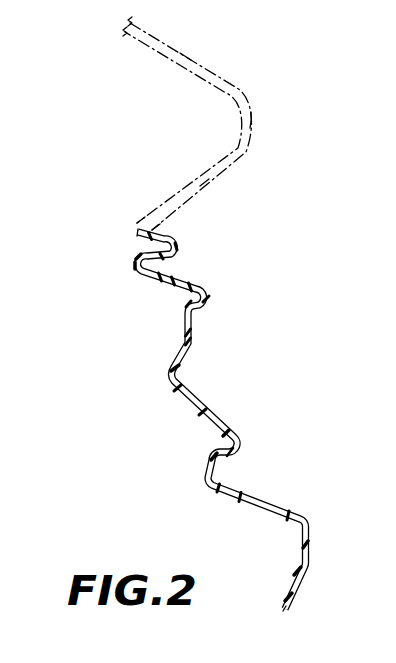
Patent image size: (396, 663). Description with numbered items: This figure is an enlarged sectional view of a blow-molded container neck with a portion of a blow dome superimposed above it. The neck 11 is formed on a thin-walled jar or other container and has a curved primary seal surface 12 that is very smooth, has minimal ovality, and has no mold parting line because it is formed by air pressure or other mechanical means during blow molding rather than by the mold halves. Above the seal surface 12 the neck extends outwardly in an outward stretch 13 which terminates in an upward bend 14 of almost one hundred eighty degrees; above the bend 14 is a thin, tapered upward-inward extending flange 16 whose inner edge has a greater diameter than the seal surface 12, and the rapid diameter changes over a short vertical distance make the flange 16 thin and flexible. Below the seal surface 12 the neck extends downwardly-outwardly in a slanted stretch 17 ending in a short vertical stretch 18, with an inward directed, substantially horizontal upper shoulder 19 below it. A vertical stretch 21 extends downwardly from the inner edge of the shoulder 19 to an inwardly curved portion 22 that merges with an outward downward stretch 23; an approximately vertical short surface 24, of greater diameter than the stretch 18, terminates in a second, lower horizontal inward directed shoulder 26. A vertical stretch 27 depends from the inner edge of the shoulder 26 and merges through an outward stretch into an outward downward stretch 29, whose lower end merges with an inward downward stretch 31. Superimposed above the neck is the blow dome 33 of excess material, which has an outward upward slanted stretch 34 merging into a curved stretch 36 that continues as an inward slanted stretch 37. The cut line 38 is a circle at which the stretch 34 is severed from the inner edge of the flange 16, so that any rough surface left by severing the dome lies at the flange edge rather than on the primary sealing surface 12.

The neck 11 is at (140, 343).
The primary seal surface 12 is at (132, 262).
The outward stretch 13 is at (170, 259).
The upward bend 14 is at (181, 247).
The flange 16 is at (166, 236).
The slanted stretch 17 is at (165, 283).
The short vertical stretch 18 is at (212, 296).
The upper shoulder 19 is at (200, 307).
The vertical stretch 21 is at (194, 321).
The inwardly curved portion 22 is at (182, 367).
The outward downward stretch 23 is at (214, 412).
The vertical short surface 24 is at (239, 441).
The lower shoulder 26 is at (231, 456).
The vertical stretch 27 is at (204, 468).
The outward downward stretch 29 is at (309, 530).
The inward downward stretch 31 is at (300, 588).
The blow dome 33 is at (185, 113).
The outward upward slanted stretch 34 is at (192, 186).
The curved stretch 36 is at (251, 125).
The inward slanted stretch 37 is at (206, 61).
The cut line 38 is at (137, 227).